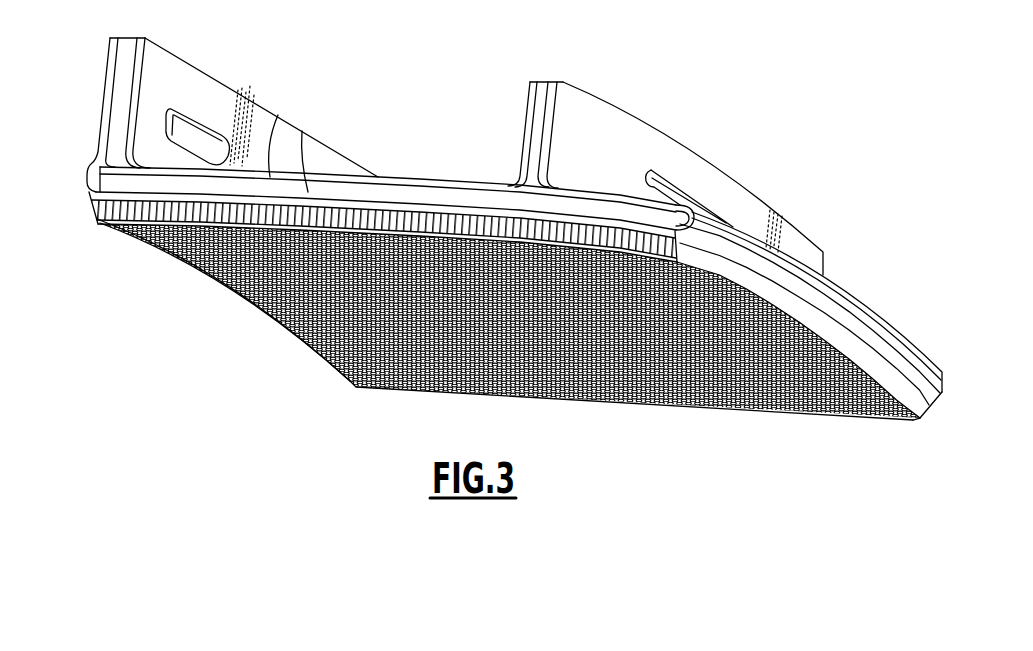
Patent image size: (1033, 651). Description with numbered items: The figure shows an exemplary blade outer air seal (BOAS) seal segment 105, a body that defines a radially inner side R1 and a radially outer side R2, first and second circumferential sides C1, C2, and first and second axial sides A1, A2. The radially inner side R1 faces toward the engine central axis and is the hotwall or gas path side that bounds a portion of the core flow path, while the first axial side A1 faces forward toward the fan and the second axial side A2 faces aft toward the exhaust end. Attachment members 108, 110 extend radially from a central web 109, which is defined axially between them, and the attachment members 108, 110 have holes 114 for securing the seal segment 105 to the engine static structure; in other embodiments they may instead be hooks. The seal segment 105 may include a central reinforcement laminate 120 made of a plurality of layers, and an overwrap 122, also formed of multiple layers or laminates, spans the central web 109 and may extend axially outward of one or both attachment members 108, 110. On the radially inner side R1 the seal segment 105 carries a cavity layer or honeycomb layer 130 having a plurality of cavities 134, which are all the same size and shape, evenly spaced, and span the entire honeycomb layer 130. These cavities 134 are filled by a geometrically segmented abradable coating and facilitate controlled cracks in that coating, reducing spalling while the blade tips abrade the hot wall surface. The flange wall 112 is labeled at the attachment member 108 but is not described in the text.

The BOAS seal segment 105 is at (792, 126).
The attachment member 108 is at (122, 65).
The attachment member 110 is at (528, 107).
The flange wall 112 is at (100, 132).
The holes 114 is at (190, 137).
The central web 109 is at (382, 186).
The central reinforcement laminate 120 is at (306, 140).
The overwrap 122 is at (288, 101).
The honeycomb layer 130 is at (784, 406).
The cavities 134 is at (735, 404).
The first axial side A1 is at (866, 318).
The second axial side A2 is at (88, 182).
The first circumferential side C1 is at (143, 192).
The second circumferential side C2 is at (946, 398).
The radially inner side R1 is at (223, 284).
The radially outer side R2 is at (450, 186).